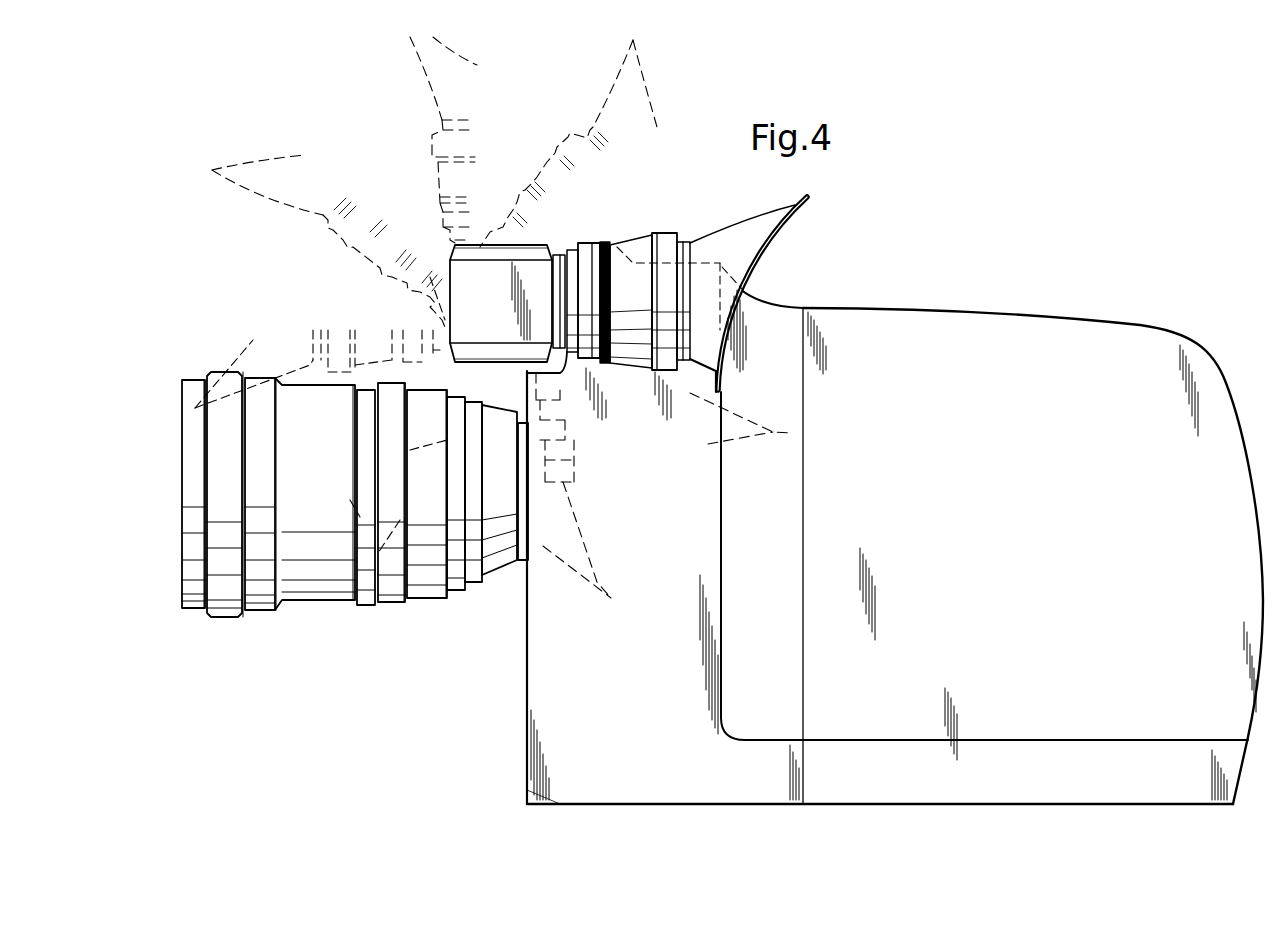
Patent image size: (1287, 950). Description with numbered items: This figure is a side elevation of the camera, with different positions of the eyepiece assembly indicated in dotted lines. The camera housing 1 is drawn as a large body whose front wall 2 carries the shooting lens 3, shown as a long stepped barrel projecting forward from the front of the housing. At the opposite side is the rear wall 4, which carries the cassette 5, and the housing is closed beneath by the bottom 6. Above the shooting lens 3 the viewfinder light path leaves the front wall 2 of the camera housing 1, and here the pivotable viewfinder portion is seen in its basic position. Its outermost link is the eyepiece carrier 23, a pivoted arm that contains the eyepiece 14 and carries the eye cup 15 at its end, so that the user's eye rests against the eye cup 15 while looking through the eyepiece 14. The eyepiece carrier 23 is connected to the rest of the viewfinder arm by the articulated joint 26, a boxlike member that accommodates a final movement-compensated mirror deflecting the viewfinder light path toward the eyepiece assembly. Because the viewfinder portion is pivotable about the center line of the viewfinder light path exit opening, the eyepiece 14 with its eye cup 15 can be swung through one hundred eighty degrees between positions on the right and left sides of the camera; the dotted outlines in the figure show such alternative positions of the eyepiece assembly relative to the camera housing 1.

The camera housing 1 is at (538, 689).
The front wall 2 is at (527, 642).
The shooting lens 3 is at (326, 600).
The rear wall 4 is at (803, 600).
The cassette 5 is at (997, 328).
The bottom 6 is at (527, 806).
The eyepiece 14 is at (635, 236).
The eye cup 15 is at (748, 230).
The eyepiece carrier 23 is at (563, 257).
The articulated joint 26 is at (512, 310).